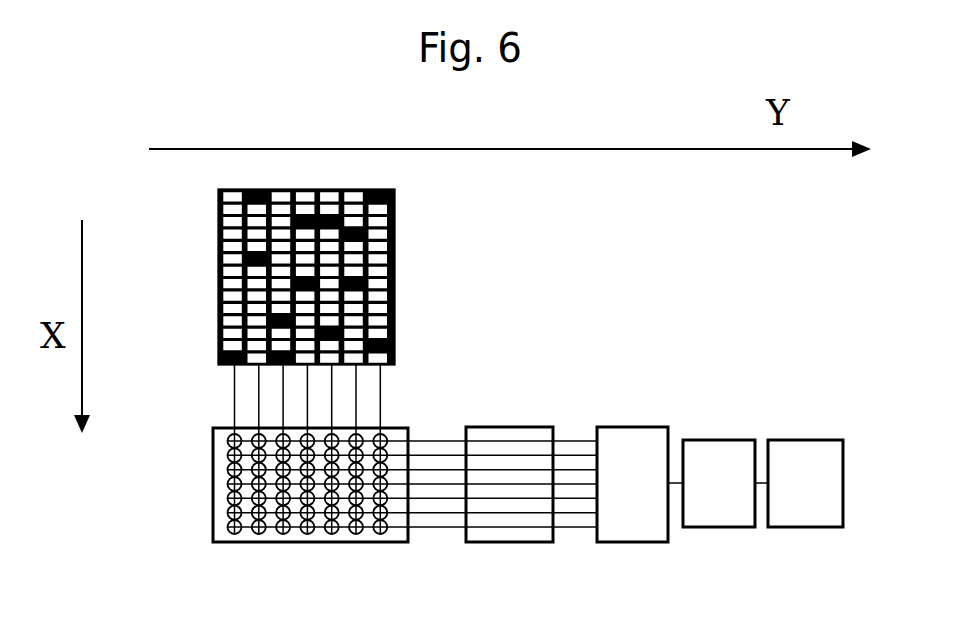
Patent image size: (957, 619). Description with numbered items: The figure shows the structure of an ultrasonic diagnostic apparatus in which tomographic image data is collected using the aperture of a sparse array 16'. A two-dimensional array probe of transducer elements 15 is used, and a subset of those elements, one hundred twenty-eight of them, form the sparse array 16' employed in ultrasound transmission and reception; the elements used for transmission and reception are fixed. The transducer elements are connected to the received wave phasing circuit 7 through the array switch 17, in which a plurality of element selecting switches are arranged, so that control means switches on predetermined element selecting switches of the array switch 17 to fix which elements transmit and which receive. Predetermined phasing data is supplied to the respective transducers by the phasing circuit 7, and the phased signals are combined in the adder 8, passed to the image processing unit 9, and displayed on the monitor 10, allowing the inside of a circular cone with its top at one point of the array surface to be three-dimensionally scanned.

The phasing circuit 7 is at (495, 427).
The adder 8 is at (600, 427).
The image processing unit 9 is at (699, 440).
The monitor 10 is at (798, 440).
The transducer element 15 is at (393, 272).
The sparse array 16' is at (246, 268).
The array switch 17 is at (213, 507).